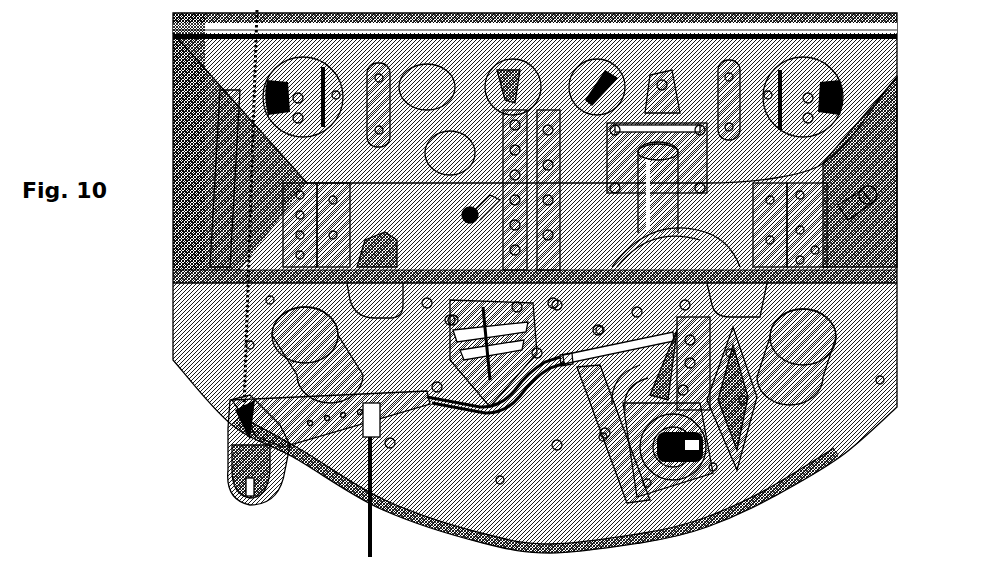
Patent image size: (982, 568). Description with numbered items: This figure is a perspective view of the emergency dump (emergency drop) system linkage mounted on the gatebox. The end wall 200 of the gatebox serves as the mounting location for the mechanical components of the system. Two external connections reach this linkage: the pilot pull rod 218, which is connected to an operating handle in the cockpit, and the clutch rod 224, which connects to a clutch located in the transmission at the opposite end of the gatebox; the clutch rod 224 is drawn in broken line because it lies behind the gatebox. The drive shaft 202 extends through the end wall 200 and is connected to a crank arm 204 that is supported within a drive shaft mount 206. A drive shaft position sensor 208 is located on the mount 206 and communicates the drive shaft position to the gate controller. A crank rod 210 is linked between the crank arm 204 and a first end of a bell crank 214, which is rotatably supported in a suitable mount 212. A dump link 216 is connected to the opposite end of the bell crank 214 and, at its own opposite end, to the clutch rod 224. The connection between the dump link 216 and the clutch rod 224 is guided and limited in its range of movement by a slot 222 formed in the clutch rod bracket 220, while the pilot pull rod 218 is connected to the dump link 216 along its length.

The end wall 200 is at (825, 463).
The drive shaft 202 is at (680, 220).
The crank arm 204 is at (700, 333).
The drive shaft mount 206 is at (747, 450).
The drive shaft position sensor 208 is at (667, 460).
The crank rod 210 is at (631, 335).
The mount 212 is at (450, 349).
The bell crank 214 is at (470, 420).
The dump link 216 is at (403, 410).
The pilot pull rod 218 is at (368, 547).
The clutch rod bracket 220 is at (232, 400).
The slot 222 is at (232, 445).
The clutch rod 224 is at (247, 334).